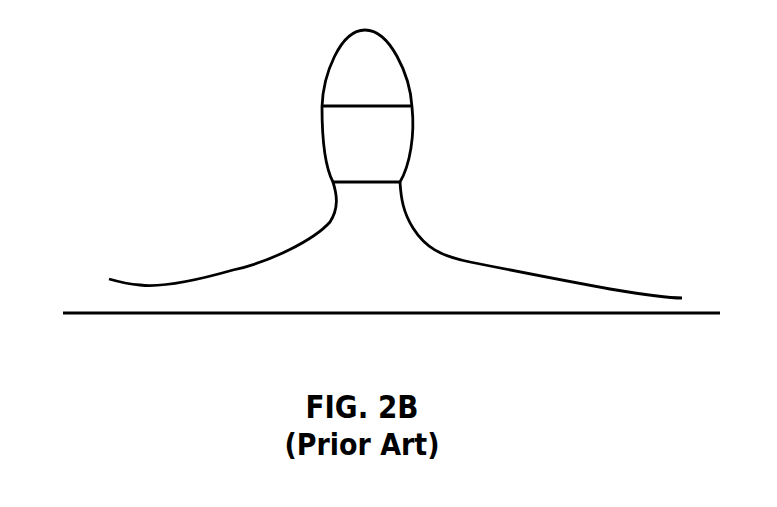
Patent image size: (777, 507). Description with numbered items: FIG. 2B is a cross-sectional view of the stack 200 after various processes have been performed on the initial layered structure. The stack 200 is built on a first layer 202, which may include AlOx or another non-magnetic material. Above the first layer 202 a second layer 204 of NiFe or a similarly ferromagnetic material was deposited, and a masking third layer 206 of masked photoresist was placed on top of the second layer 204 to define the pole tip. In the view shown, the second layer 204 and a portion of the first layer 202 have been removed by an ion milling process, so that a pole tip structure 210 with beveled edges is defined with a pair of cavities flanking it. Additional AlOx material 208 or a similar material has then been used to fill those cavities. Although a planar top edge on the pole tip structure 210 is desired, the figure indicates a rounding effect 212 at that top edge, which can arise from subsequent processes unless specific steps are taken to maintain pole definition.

The stack 200 is at (689, 330).
The first layer 202 is at (78, 294).
The second layer 204 is at (295, 130).
The masking third layer 206 is at (278, 31).
The additional AlOx material 208 is at (532, 165).
The pole tip structure 210 is at (413, 143).
The rounding effect 212 is at (406, 107).